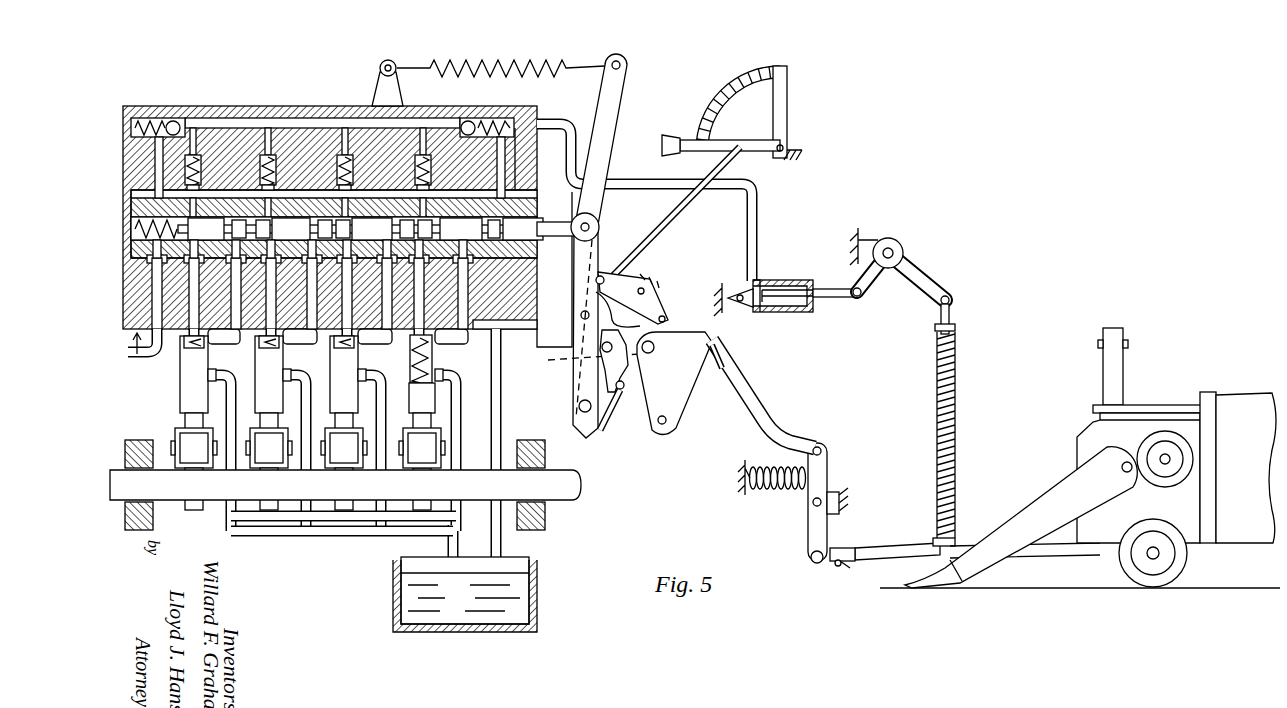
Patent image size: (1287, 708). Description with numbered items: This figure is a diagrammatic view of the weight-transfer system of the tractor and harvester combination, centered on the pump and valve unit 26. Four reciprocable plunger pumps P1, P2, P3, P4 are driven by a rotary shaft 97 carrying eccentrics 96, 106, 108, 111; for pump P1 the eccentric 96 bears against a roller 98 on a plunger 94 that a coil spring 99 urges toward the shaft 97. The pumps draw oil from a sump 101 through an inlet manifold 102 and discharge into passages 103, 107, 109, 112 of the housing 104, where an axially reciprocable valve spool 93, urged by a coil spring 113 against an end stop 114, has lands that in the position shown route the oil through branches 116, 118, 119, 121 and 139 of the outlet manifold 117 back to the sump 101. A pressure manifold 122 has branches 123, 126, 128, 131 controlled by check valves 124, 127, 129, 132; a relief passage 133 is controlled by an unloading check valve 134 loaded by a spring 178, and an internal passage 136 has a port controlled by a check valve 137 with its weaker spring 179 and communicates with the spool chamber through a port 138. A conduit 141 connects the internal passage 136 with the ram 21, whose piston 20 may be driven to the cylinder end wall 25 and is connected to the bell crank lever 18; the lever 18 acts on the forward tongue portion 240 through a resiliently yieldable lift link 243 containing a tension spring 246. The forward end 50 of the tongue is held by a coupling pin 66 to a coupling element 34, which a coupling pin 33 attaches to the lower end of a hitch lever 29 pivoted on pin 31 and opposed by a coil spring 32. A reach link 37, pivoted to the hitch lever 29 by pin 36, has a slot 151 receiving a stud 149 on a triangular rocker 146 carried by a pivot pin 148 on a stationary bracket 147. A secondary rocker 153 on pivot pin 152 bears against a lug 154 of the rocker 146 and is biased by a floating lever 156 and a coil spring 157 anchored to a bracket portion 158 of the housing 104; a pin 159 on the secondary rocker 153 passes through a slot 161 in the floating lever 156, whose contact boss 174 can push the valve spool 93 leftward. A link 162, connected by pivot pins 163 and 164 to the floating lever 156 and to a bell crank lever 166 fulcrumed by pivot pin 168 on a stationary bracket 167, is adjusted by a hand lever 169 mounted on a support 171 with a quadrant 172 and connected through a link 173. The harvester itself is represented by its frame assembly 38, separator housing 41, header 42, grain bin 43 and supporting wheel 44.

The bell crank lever 18 is at (918, 289).
The piston 20 is at (768, 312).
The actuating ram 21 is at (787, 280).
The end wall 25 is at (798, 312).
The pump and valve unit 26 is at (172, 378).
The hitch lever 29 is at (827, 472).
The pivot pin 31 is at (814, 506).
The coil spring 32 is at (760, 492).
The coupling pin 33 is at (815, 563).
The coupling element 34 is at (836, 567).
The pivot pin 36 is at (822, 449).
The reach link 37 is at (752, 409).
The frame assembly 38 is at (1045, 548).
The separator housing 41 is at (1252, 478).
The header 42 is at (1050, 491).
The grain bin 43 is at (1160, 405).
The supporting wheel 44 is at (1188, 561).
The forward end of draft tongue 50 is at (846, 548).
The coupling pin 66 is at (843, 566).
The valve spool 93 is at (562, 220).
The plunger 94 is at (436, 420).
The eccentric 96 is at (490, 490).
The rotary shaft 97 is at (580, 488).
The roller 98 is at (412, 489).
The coil spring 99 is at (434, 361).
The sump 101 is at (533, 600).
The inlet manifold 102 is at (340, 537).
The passage 103 is at (423, 304).
The valve housing 104 is at (305, 118).
The eccentric 106 is at (333, 489).
The passage 107 is at (349, 299).
The eccentric 108 is at (258, 489).
The passage 109 is at (276, 311).
The eccentric 111 is at (183, 489).
The passage 112 is at (196, 299).
The coil spring 113 is at (136, 269).
The end stop 114 is at (540, 248).
The branch 116 is at (390, 310).
The outlet manifold 117 is at (498, 318).
The branch 118 is at (315, 304).
The branch 119 is at (238, 293).
The branch 121 is at (160, 302).
The pressure manifold 122 is at (368, 107).
The first branch 123 is at (431, 147).
The check valve 124 is at (431, 181).
The second branch 126 is at (353, 147).
The check valve 127 is at (353, 181).
The third branch 128 is at (277, 147).
The check valve 129 is at (277, 181).
The fourth branch 131 is at (201, 147).
The check valve 132 is at (201, 181).
The relief passage 133 is at (168, 142).
The check valve 134 is at (180, 122).
The internal passage 136 is at (505, 149).
The check valve 137 is at (476, 118).
The port 138 is at (504, 181).
The branch 139 is at (470, 289).
The conduit 141 is at (566, 160).
The triangular rocker 146 is at (680, 419).
The stationary bracket 147 is at (545, 350).
The pivot pin 148 is at (656, 347).
The stud 149 is at (723, 337).
The slot 151 is at (726, 359).
The pivot pin 152 is at (630, 364).
The secondary rocker 153 is at (598, 436).
The lug 154 is at (616, 397).
The floating lever 156 is at (614, 101).
The coil spring 157 is at (520, 64).
The bracket portion 158 is at (380, 67).
The pin 159 is at (582, 433).
The slot 161 is at (579, 407).
The link 162 is at (585, 295).
The pivot pin 163 is at (581, 315).
The pivot pin 164 is at (668, 320).
The bell crank lever 166 is at (640, 269).
The stationary bracket 167 is at (668, 309).
The pivot pin 168 is at (660, 284).
The hand lever 169 is at (668, 135).
The support 171 is at (787, 114).
The quadrant 172 is at (730, 100).
The link 173 is at (690, 202).
The contact boss 174 is at (600, 226).
The spring 178 is at (165, 118).
The spring 179 is at (505, 118).
The forward tongue portion 240 is at (890, 547).
The lift link 243 is at (937, 417).
The tension spring 246 is at (957, 413).
The plunger pump P1 is at (408, 384).
The plunger pump P2 is at (330, 374).
The plunger pump P3 is at (255, 372).
The plunger pump P4 is at (180, 407).